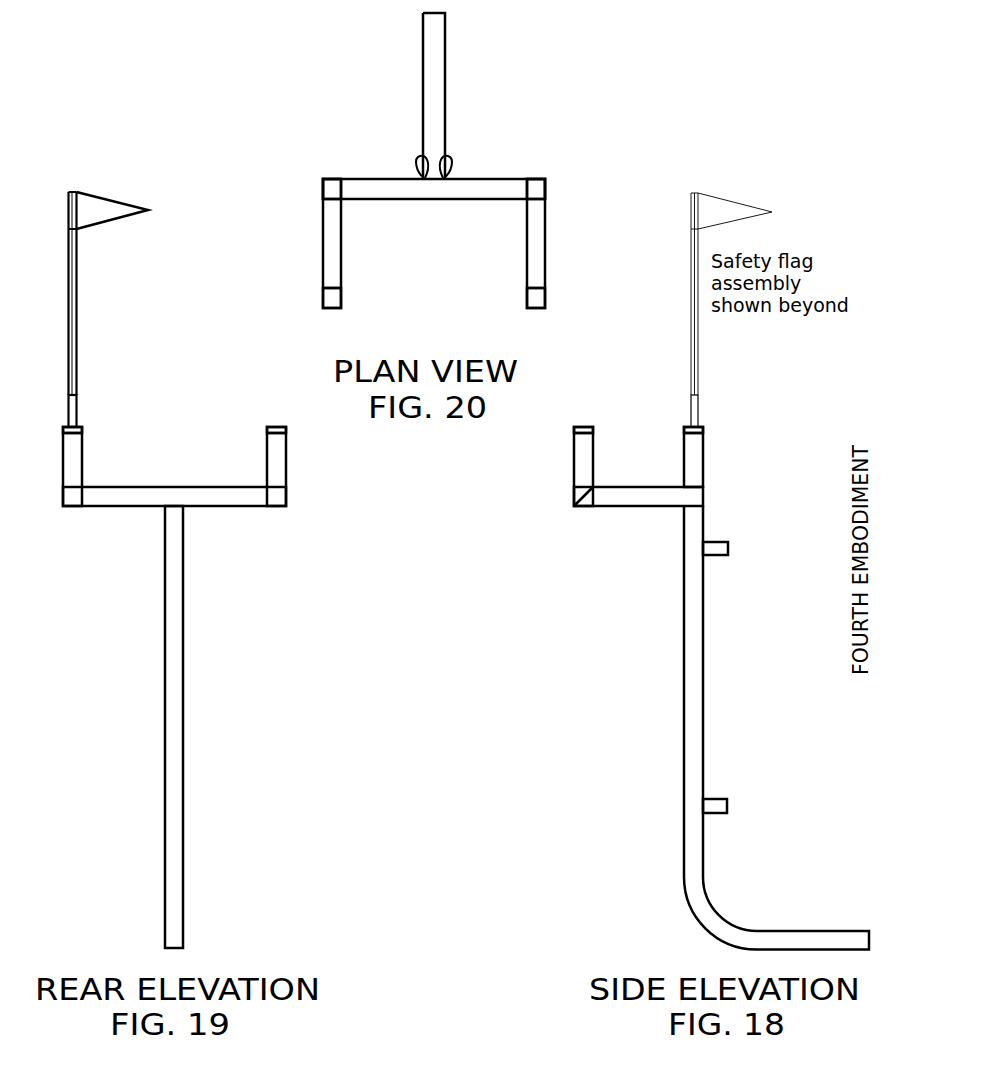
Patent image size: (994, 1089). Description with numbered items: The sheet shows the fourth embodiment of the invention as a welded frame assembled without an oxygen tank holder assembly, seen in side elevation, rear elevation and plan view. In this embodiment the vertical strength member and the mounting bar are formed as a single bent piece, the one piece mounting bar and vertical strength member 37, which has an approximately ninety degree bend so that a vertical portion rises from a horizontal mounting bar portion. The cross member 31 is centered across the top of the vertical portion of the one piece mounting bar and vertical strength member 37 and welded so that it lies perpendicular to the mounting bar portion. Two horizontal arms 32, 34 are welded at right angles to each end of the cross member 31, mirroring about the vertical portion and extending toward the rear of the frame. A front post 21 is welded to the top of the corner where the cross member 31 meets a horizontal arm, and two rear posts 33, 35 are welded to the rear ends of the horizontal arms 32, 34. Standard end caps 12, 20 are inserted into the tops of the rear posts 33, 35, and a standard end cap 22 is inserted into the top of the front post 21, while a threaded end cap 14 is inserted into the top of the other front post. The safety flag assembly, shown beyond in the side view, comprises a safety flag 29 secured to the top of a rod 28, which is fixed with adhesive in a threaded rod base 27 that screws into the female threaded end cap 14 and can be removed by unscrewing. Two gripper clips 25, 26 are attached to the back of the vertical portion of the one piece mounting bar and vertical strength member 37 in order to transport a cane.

In FIG. 20, the standard end cap 12 is at (321, 309).
In FIG. 19, the standard end cap 12 is at (83, 426).
In FIG. 20, the threaded end cap 14 is at (322, 178).
In FIG. 20, the standard end cap 20 is at (548, 305).
In FIG. 19, the standard end cap 20 is at (271, 425).
In FIG. 18, the standard end cap 20 is at (583, 424).
In FIG. 18, the front post 21 is at (705, 462).
In FIG. 20, the standard end cap 22 is at (548, 178).
In FIG. 18, the standard end cap 22 is at (705, 425).
In FIG. 20, the gripper clip 25 is at (417, 160).
In FIG. 18, the gripper clip 25 is at (729, 541).
In FIG. 18, the gripper clip 26 is at (728, 798).
In FIG. 19, the threaded rod base 27 is at (67, 405).
In FIG. 18, the threaded rod base 27 is at (694, 411).
In FIG. 19, the rod 28 is at (67, 315).
In FIG. 18, the rod 28 is at (694, 294).
In FIG. 19, the safety flag 29 is at (109, 224).
In FIG. 18, the safety flag 29 is at (735, 211).
In FIG. 20, the cross member 31 is at (470, 177).
In FIG. 19, the cross member 31 is at (227, 508).
In FIG. 20, the horizontal arm 32 is at (547, 236).
In FIG. 18, the horizontal arm 32 is at (635, 509).
In FIG. 19, the rear post 33 is at (265, 453).
In FIG. 18, the rear post 33 is at (572, 472).
In FIG. 20, the horizontal arm 34 is at (322, 233).
In FIG. 19, the rear post 35 is at (84, 457).
In FIG. 20, the one piece mounting bar and vertical strength member 37 is at (447, 82).
In FIG. 19, the one piece mounting bar and vertical strength member 37 is at (185, 660).
In FIG. 18, the one piece mounting bar and vertical strength member 37 is at (705, 612).